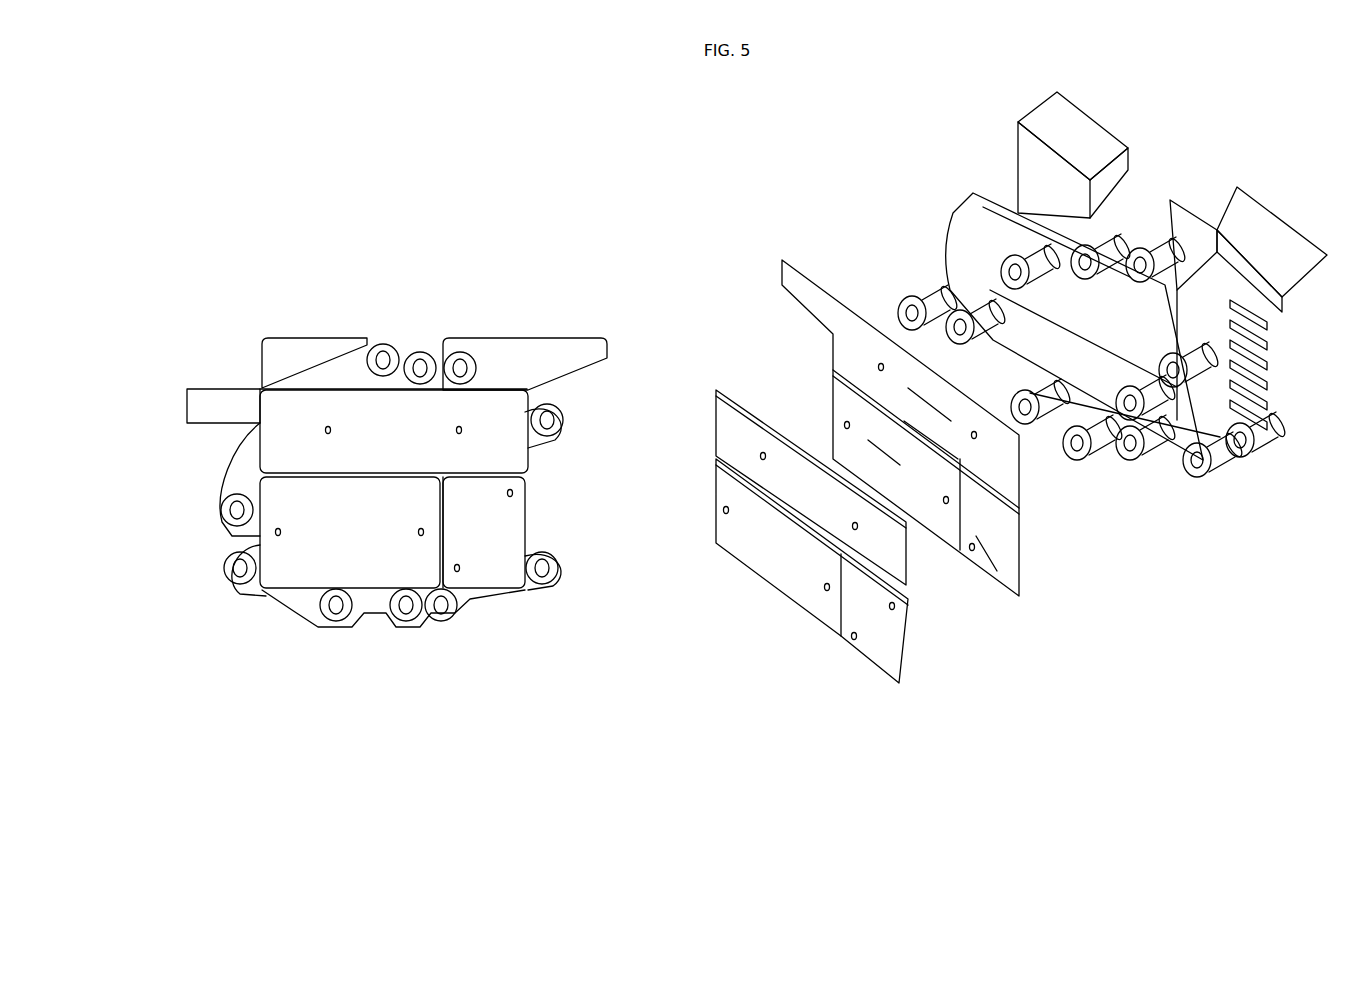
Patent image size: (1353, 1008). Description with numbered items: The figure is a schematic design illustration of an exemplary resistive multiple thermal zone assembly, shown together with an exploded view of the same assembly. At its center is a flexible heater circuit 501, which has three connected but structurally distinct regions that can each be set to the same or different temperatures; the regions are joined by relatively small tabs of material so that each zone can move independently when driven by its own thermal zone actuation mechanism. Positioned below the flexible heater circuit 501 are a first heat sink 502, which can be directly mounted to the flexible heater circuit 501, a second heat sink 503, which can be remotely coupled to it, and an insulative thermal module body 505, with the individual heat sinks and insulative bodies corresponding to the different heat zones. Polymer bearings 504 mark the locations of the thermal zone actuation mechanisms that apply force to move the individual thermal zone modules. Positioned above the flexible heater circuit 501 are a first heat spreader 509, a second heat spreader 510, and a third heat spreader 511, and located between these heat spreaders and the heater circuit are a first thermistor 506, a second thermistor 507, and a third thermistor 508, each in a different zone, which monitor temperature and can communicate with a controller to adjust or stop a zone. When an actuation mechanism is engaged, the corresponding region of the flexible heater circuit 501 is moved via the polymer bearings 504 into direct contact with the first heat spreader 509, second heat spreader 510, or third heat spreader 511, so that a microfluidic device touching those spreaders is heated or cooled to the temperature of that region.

The flexible heater circuit 501 is at (498, 261).
The first heat sink 502 is at (574, 710).
The second heat sink 503 is at (834, 597).
The polymer bearings 504 is at (383, 366).
The insulative thermal module body 505 is at (600, 395).
The first thermistor 506 is at (858, 428).
The second thermistor 507 is at (1017, 568).
The third thermistor 508 is at (1036, 519).
The first heat spreader element 509 is at (583, 498).
The second heat spreader element 510 is at (675, 580).
The third heat spreader element 511 is at (446, 446).